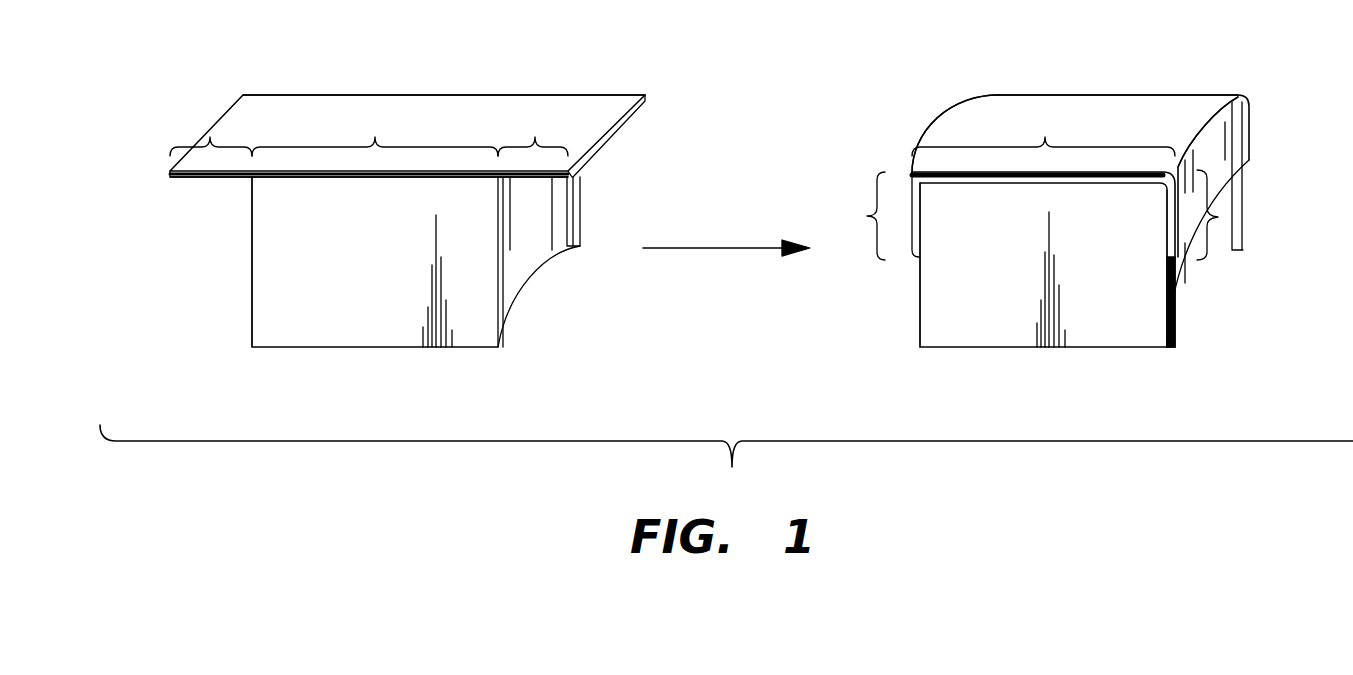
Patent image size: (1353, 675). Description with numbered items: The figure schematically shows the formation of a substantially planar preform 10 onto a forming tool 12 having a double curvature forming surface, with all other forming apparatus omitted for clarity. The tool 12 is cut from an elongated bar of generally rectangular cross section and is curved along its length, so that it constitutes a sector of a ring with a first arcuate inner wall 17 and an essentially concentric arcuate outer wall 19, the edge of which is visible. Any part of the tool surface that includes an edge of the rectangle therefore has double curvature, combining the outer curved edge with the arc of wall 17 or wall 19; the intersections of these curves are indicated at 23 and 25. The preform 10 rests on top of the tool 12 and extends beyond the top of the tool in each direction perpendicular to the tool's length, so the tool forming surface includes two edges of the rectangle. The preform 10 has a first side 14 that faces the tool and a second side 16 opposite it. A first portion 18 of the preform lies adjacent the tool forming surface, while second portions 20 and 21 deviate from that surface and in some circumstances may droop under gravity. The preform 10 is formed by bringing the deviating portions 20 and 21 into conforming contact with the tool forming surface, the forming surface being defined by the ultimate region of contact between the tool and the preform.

The preform 10 is at (443, 108).
The forming tool 12 is at (268, 267).
The first side 14 is at (200, 180).
The second side 16 is at (292, 130).
The first arcuate inner wall 17 is at (536, 241).
The first portion 18 is at (713, 132).
The arcuate outer wall 19 is at (252, 228).
The second portion 20 is at (866, 216).
The second portion 21 is at (1248, 212).
The intersection of curves 23 is at (1205, 128).
The intersection of curves 25 is at (953, 120).